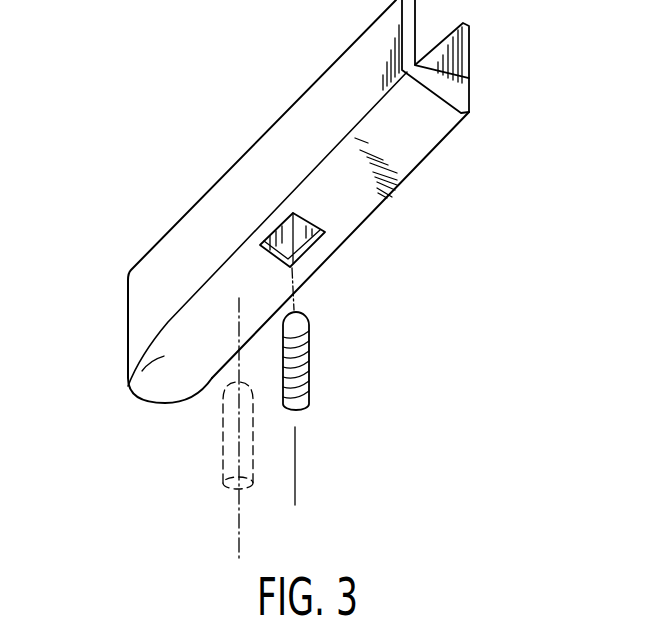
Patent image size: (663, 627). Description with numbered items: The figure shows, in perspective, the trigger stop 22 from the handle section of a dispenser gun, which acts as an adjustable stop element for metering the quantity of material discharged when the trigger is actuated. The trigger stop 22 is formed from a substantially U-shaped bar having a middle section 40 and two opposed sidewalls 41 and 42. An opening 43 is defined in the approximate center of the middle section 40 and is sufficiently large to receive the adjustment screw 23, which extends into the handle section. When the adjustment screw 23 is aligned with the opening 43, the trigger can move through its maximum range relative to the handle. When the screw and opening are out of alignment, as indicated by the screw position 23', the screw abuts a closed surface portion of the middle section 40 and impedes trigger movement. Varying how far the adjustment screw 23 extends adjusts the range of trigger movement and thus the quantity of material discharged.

The trigger stop 22 is at (299, 222).
The adjustment screw 23 is at (331, 408).
The adjustment screw in abutting position 23' is at (201, 429).
The middle section 40 is at (128, 386).
The sidewall 41 is at (470, 70).
The sidewall 42 is at (374, 54).
The opening 43 is at (308, 225).